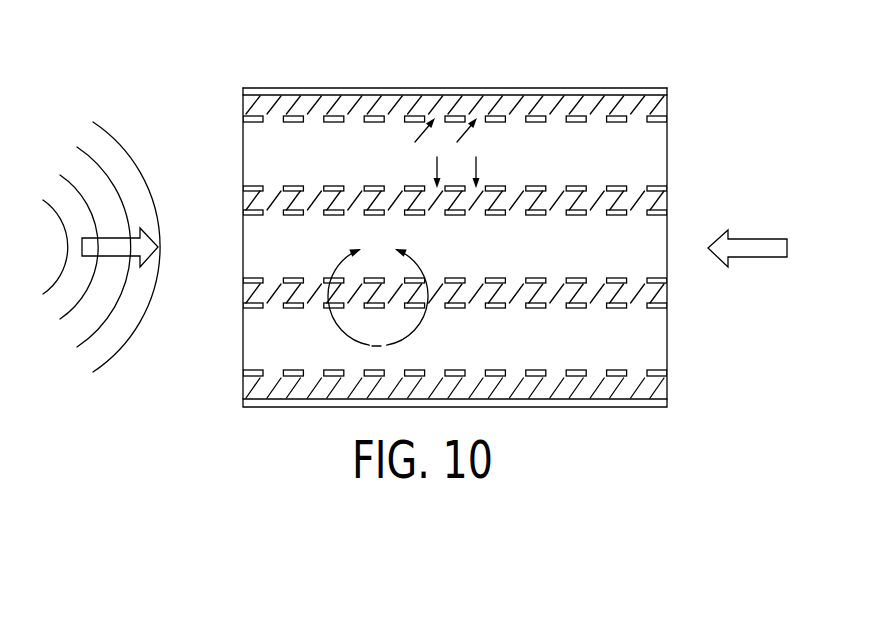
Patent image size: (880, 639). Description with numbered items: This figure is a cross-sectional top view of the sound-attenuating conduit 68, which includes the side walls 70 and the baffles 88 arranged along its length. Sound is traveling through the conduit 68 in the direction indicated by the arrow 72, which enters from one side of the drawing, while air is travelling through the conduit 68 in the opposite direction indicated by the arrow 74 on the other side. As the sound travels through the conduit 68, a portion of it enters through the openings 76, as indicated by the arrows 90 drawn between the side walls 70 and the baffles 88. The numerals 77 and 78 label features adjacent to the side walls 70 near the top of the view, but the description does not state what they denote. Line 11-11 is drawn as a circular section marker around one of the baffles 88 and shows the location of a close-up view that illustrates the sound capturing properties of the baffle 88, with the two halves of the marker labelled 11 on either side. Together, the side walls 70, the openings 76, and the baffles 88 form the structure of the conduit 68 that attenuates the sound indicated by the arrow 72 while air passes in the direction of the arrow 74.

The sound-attenuating conduit 68 is at (215, 48).
The side walls 70 is at (313, 93).
The arrow 72 is at (160, 240).
The arrow 74 is at (762, 243).
The openings 76 is at (635, 373).
The face sheet hatched wall 77 is at (578, 102).
The panel outer wall 78 is at (656, 97).
The baffles 88 is at (575, 187).
The arrows 90 is at (478, 167).
The line 11- 11 is at (382, 285).